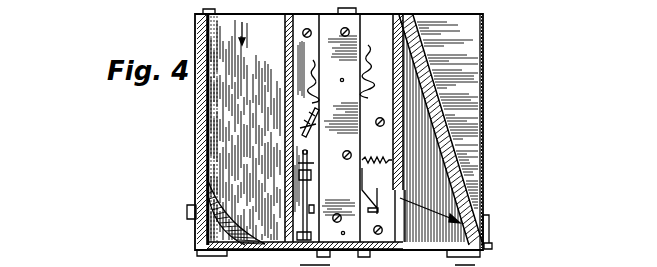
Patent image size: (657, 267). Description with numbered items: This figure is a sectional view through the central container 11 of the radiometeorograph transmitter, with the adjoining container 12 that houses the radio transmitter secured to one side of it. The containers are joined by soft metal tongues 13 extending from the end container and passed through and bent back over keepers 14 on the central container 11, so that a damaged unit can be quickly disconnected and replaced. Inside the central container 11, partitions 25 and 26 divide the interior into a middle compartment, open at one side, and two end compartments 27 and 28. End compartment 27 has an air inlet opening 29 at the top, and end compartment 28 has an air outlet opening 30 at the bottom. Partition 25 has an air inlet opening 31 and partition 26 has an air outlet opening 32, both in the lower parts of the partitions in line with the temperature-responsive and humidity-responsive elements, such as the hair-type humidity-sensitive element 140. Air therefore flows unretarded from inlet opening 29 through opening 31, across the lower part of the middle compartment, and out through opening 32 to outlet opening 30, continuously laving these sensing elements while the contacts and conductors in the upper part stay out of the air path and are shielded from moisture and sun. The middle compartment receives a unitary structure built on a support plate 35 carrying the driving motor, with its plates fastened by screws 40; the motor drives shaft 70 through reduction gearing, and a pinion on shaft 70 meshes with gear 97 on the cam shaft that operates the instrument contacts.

The central container 11 is at (465, 167).
The container 12 is at (487, 104).
The soft metal tongue 13 is at (197, 238).
The keeper 14 is at (187, 213).
The partition 25 is at (290, 58).
The partition 26 is at (405, 78).
The end compartment 27 is at (222, 130).
The end compartment 28 is at (436, 143).
The air inlet opening 29 is at (203, 12).
The air outlet opening 30 is at (489, 241).
The air inlet opening 31 is at (292, 198).
The air outlet opening 32 is at (402, 233).
The support plate 35 is at (413, 33).
The screw 40 is at (350, 32).
The shaft 70 is at (344, 126).
The gear 97 is at (400, 42).
The humidity-sensitive element 140 is at (274, 182).